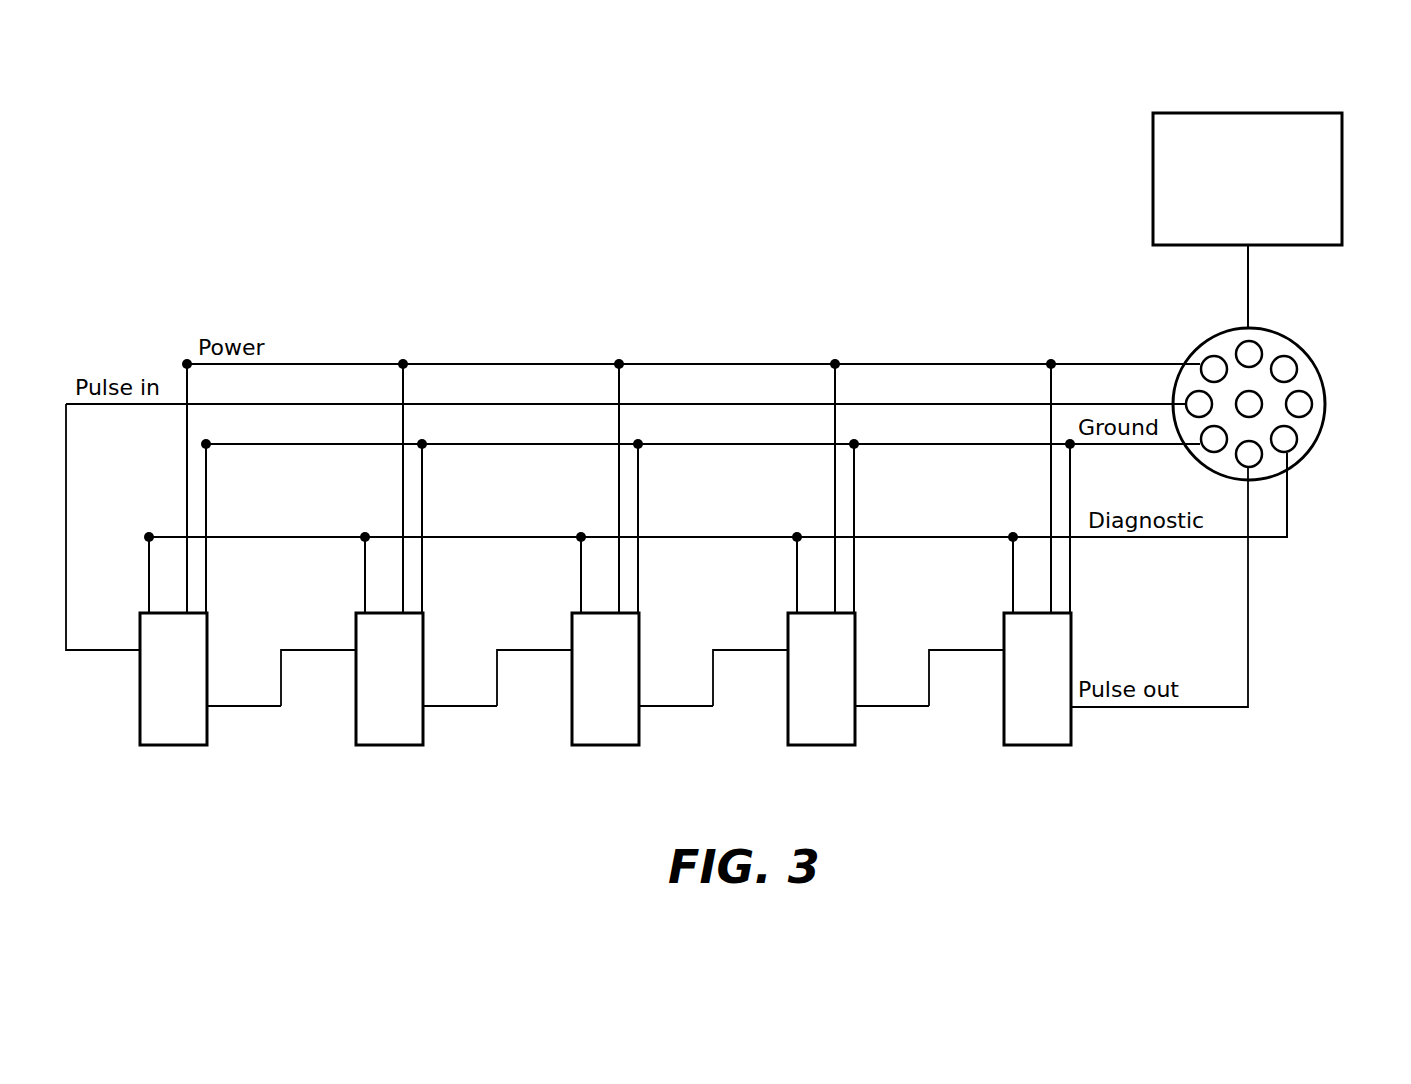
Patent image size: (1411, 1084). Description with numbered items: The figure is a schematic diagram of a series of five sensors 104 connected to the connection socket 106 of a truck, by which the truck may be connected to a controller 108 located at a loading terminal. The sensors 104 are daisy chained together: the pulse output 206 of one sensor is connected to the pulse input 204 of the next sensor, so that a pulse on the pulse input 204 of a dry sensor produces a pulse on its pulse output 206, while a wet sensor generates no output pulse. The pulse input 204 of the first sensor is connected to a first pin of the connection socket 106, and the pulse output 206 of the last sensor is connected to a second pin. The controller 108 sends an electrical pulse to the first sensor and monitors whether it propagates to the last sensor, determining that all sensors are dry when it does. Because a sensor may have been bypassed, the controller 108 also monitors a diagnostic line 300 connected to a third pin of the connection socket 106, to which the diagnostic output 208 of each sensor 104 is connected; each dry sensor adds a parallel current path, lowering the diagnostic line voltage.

The sensor 104 is at (152, 691).
The connection socket 106 is at (1290, 339).
The controller 108 is at (1226, 194).
The pulse input 204 is at (95, 652).
The pulse output 206 is at (252, 708).
The diagnostic output 208 is at (148, 565).
The diagnostic line 300 is at (1287, 514).